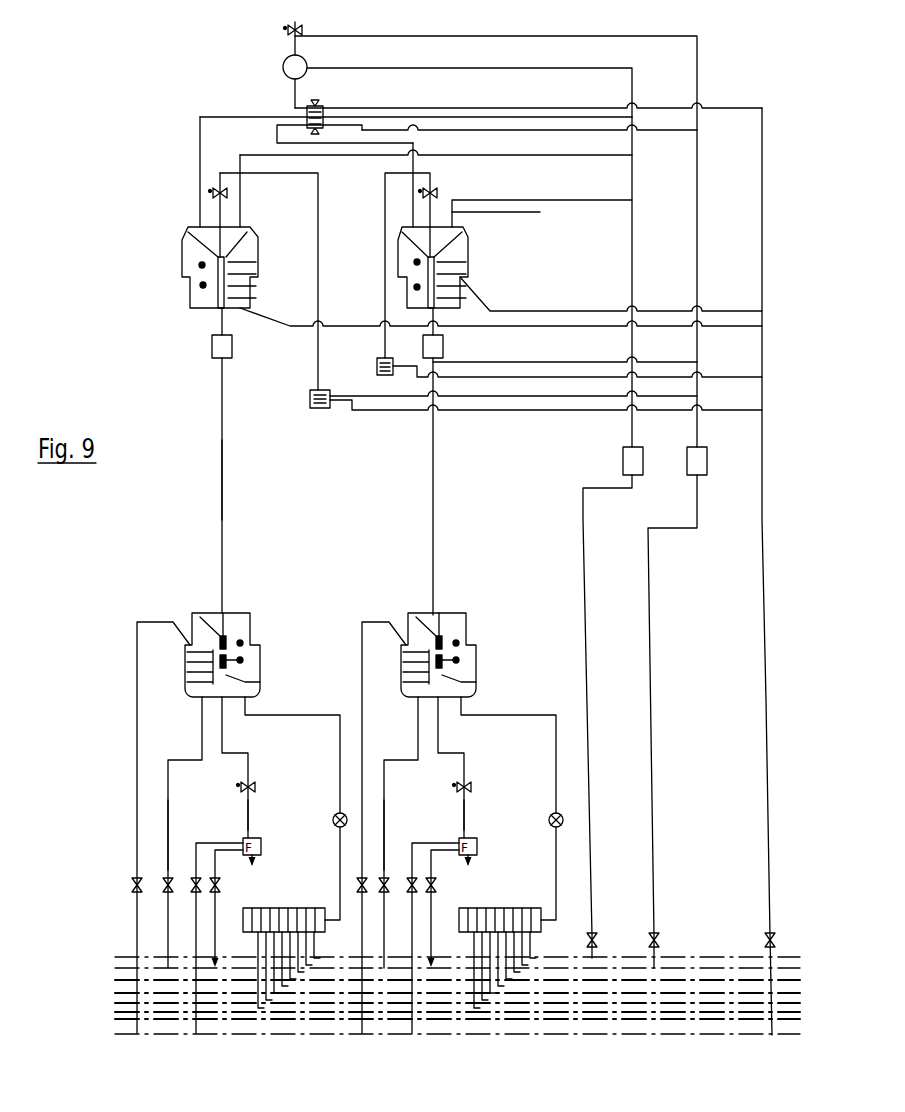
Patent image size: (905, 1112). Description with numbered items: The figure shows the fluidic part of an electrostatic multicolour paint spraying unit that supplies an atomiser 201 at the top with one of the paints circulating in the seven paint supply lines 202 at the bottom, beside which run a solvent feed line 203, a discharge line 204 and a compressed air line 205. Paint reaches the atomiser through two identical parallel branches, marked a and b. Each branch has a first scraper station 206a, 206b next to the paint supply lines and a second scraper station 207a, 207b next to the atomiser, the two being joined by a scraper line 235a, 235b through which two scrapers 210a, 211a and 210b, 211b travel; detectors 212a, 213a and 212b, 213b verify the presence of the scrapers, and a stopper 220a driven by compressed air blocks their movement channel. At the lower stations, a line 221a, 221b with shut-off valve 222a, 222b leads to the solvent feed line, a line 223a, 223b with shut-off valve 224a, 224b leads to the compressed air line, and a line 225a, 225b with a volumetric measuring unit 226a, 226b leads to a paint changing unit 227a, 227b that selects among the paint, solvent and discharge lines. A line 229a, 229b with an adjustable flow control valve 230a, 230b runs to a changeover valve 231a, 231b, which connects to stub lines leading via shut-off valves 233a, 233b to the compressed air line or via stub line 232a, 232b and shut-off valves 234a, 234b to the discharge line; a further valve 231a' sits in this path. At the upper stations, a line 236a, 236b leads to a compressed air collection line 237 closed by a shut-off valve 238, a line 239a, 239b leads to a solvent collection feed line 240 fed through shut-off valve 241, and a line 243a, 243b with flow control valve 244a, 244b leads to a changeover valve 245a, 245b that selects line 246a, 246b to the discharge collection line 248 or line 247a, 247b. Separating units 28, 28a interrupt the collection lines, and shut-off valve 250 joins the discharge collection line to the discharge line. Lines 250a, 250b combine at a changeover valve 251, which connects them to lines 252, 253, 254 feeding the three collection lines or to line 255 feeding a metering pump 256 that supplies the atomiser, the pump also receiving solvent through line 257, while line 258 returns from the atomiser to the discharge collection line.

The atomiser 201 is at (283, 30).
The metering pump 256 is at (283, 67).
The line 255 is at (305, 115).
The line 257 is at (537, 64).
The line 258 is at (653, 40).
The changeover valve 251 is at (325, 108).
The line 252 is at (363, 127).
The line 253 is at (472, 108).
The line 254 is at (508, 108).
The line 250a is at (213, 190).
The line 250b is at (277, 135).
The adjustable flow control valve 244a is at (215, 190).
The adjustable flow control valve 244b is at (440, 193).
The line 239a is at (242, 192).
The line 239b is at (558, 198).
The line 243a is at (320, 213).
The line 243b is at (385, 262).
The solvent collection feed line 240 is at (600, 238).
The discharge collection line 248 is at (690, 232).
The second scraper station 207a is at (138, 210).
The second scraper station 207b is at (478, 258).
The detector 213a is at (200, 264).
The detector 213b is at (415, 262).
The detector 212a is at (203, 285).
The detector 212b is at (415, 287).
The line 236a is at (285, 320).
The line 236b is at (560, 311).
The separating unit 28 is at (203, 348).
The controller 28a is at (330, 957).
The stopper 220a is at (228, 335).
The scraper line 235a is at (224, 478).
The scraper line 235b is at (435, 478).
The changeover valve 245a is at (320, 410).
The changeover valve 245b is at (375, 368).
The line 246a is at (393, 412).
The line 246b is at (455, 362).
The line 247a is at (475, 412).
The line 247b is at (560, 377).
The compressed air collection line 237 is at (765, 528).
The shut-off valve 241 is at (593, 933).
The shut-off valve 250 is at (655, 933).
The shut-off valve 238 is at (771, 933).
The first scraper station 206a is at (163, 592).
The first scraper station 206b is at (460, 590).
The scraper 210a is at (257, 613).
The scraper 210b is at (473, 613).
The scraper 211a is at (243, 660).
The scraper 211b is at (459, 660).
The line 223a is at (137, 678).
The line 223b is at (362, 622).
The shut-off valve 224a is at (135, 878).
The shut-off valve 224b is at (362, 898).
The line 221a is at (202, 740).
The line 221b is at (418, 740).
The shut-off valve 233a is at (168, 900).
The shut-off valve 233b is at (385, 900).
The shut-off valve 222a is at (170, 870).
The shut-off valve 222b is at (386, 870).
The line 229a is at (225, 725).
The line 229b is at (441, 725).
The line 231a' is at (210, 798).
The changeover valve 231a is at (289, 847).
The changeover valve 231b is at (463, 805).
The adjustable flow control valve 230a is at (250, 795).
The adjustable flow control valve 230b is at (466, 795).
The stub line 232a is at (218, 868).
The stub line 232b is at (476, 858).
The shut-off valve 234a is at (215, 900).
The shut-off valve 234b is at (433, 890).
The line 225a is at (340, 712).
The line 225b is at (556, 712).
The volumetric measuring unit 226a is at (337, 813).
The volumetric measuring unit 226b is at (553, 813).
The paint changing unit 227a is at (300, 908).
The paint changing unit 227b is at (538, 925).
The solvent feed line 203 is at (128, 955).
The discharge line 204 is at (125, 968).
The paint supply lines 202 is at (108, 975).
The compressed air line 205 is at (125, 1034).